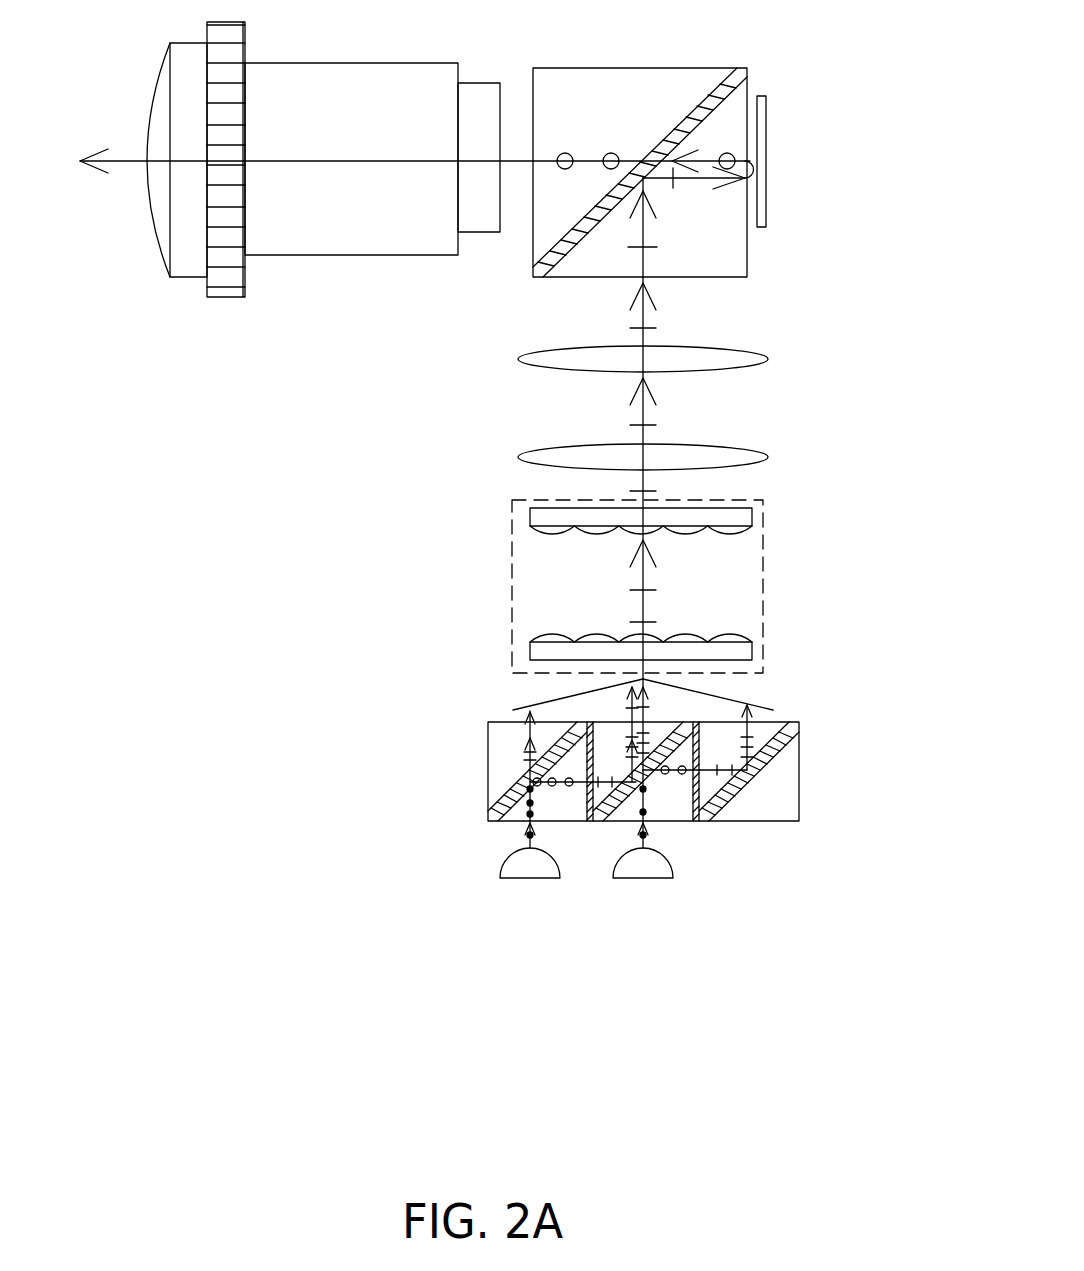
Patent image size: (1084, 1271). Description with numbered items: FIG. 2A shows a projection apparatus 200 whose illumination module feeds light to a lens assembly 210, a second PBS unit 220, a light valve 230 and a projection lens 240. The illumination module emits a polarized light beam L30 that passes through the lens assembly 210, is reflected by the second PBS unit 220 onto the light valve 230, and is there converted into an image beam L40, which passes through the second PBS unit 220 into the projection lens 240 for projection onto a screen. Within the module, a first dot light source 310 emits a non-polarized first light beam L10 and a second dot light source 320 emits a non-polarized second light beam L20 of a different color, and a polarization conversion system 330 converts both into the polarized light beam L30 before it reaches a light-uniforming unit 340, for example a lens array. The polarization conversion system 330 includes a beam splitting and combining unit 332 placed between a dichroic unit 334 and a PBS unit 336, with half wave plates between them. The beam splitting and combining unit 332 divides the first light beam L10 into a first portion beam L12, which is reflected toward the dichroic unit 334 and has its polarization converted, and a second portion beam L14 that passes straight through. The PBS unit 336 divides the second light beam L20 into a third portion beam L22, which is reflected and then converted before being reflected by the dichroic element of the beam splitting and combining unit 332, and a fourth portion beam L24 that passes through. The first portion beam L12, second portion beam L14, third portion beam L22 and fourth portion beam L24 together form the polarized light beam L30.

The projection apparatus 200 is at (266, 1050).
The lens assembly 210 is at (492, 402).
The second PBS unit 220 is at (666, 138).
The light valve 230 is at (766, 137).
The projection lens 240 is at (384, 80).
The first dot light source 310 is at (640, 862).
The second dot light source 320 is at (526, 870).
The polarization conversion system 330 is at (630, 888).
The beam splitting and combining unit 332 is at (680, 806).
The dichroic unit 334 is at (780, 806).
The PBS unit 336 is at (572, 808).
The light-uniforming unit 340 is at (512, 605).
The first light beam L10 is at (643, 832).
The first portion beam L12 is at (643, 729).
The second portion beam L14 is at (641, 770).
The second light beam L20 is at (537, 832).
The third portion beam L22 is at (530, 790).
The fourth portion beam L24 is at (528, 730).
The polarized light beam L30 is at (643, 666).
The image beam L40 is at (590, 160).